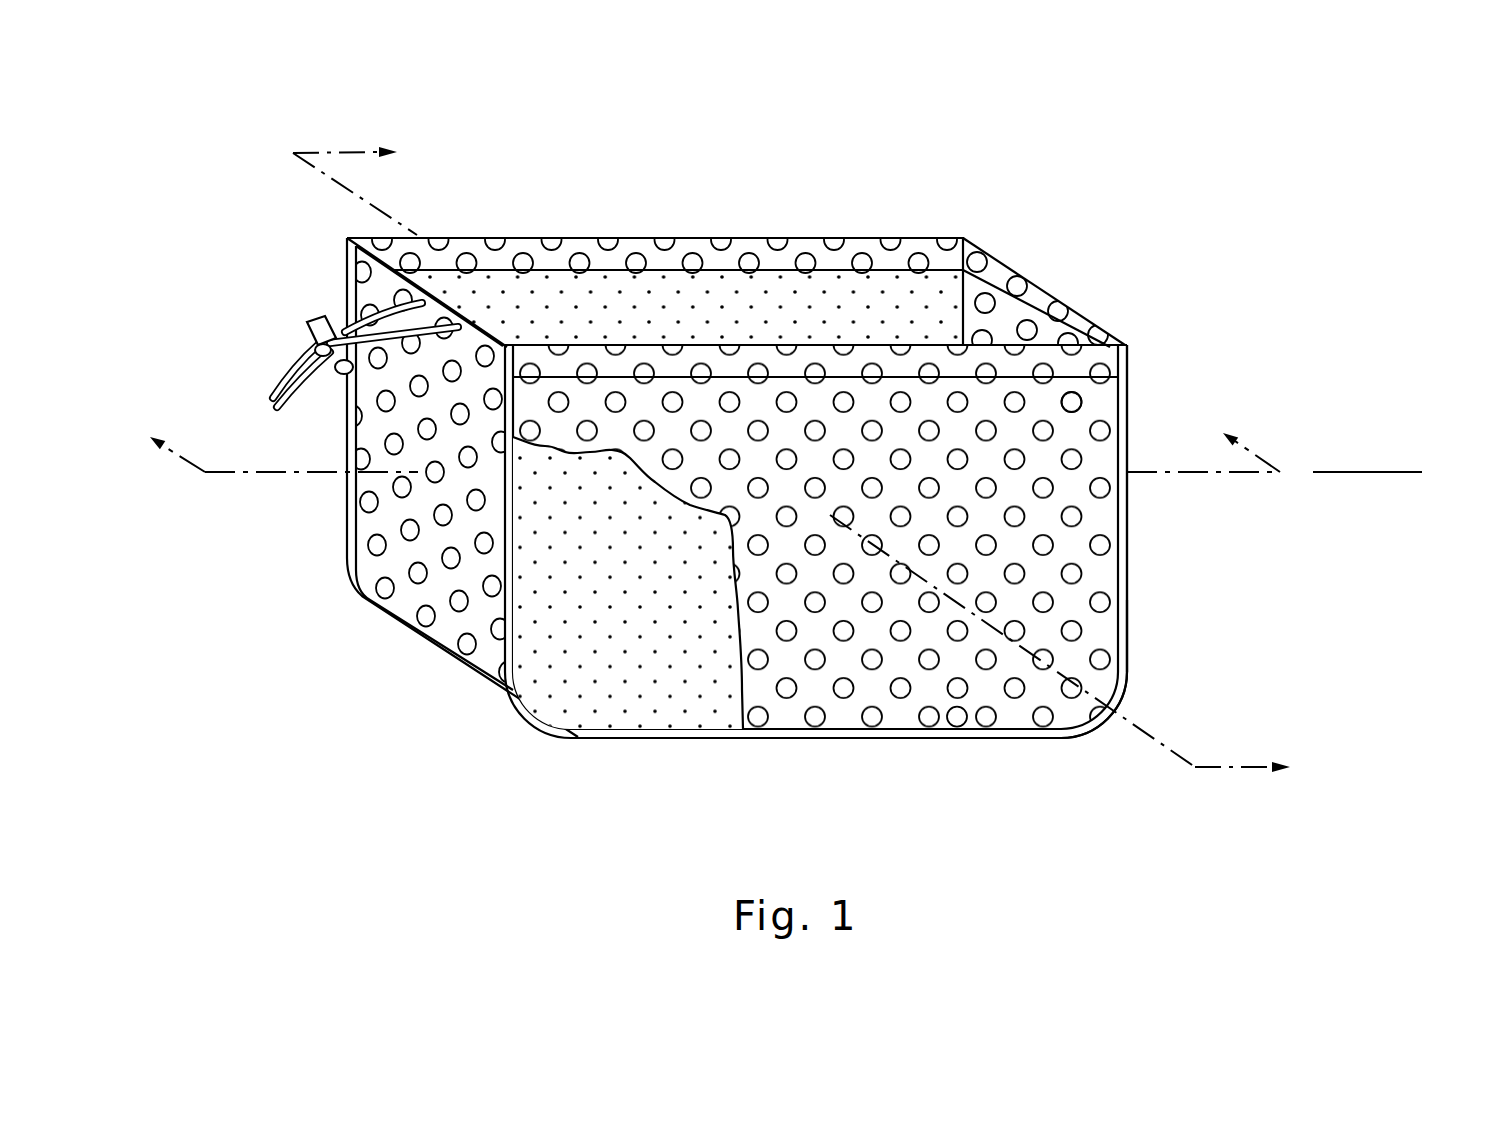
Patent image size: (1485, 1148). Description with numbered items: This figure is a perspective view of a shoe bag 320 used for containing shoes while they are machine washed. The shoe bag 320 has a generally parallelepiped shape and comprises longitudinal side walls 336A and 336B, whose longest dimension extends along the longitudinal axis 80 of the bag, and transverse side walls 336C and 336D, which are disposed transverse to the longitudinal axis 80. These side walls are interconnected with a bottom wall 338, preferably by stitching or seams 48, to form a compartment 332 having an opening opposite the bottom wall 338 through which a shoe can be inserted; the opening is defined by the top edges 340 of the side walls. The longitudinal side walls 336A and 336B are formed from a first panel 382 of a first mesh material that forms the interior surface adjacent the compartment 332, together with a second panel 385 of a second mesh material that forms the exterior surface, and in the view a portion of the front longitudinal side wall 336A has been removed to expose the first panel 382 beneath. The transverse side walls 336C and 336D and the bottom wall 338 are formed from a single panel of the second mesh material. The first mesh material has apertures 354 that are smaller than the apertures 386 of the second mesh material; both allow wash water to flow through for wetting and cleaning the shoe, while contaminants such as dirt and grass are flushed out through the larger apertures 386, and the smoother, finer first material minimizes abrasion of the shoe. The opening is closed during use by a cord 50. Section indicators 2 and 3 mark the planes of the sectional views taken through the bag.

The shoe bag 320 is at (1120, 148).
The top edges 340 is at (520, 238).
The longitudinal side wall 336B is at (682, 248).
The compartment 332 is at (840, 294).
The apertures 386 is at (1081, 397).
The cord 50 is at (348, 315).
The longitudinal axis 80 is at (1367, 472).
The transverse side wall 336C is at (420, 548).
The first panel 382 is at (532, 607).
The bottom wall 338 is at (586, 748).
The apertures 354 is at (708, 695).
The longitudinal side wall 336A is at (880, 702).
The second panel 385 is at (950, 712).
The transverse side wall 336D is at (1150, 553).
The seams 48 is at (1127, 631).
The section line 2- 2 is at (701, 438).
The section line 3- 3 is at (815, 460).